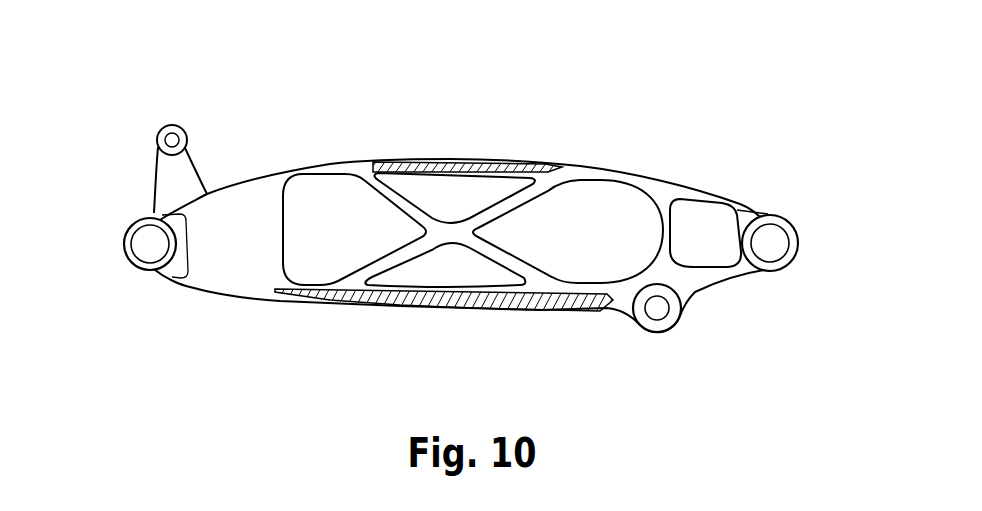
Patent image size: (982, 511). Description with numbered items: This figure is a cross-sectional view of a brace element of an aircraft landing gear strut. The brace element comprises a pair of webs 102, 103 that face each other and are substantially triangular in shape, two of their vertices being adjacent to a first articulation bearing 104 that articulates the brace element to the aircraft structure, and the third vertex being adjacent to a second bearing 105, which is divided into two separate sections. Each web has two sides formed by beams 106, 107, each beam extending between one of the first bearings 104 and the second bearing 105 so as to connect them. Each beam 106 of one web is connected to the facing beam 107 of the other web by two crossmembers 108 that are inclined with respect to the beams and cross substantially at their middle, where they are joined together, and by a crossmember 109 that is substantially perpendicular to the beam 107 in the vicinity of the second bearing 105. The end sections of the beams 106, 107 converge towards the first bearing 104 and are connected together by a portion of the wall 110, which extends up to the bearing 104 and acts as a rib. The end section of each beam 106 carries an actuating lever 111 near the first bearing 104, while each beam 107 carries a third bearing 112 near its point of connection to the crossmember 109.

The web 102 is at (482, 162).
The web 103 is at (453, 309).
The first articulation bearing 104 is at (128, 247).
The second bearing 105 is at (794, 250).
The beam 106 is at (625, 180).
The beam 107 is at (622, 296).
The crossmember 108 is at (392, 203).
The crossmember 109 is at (670, 231).
The wall 110 is at (238, 245).
The actuating lever 111 is at (170, 175).
The third bearing 112 is at (660, 326).